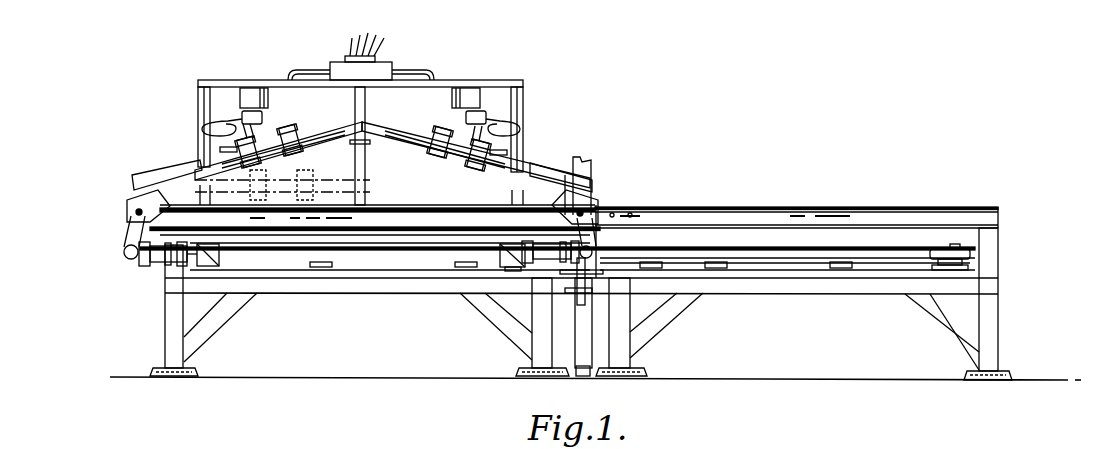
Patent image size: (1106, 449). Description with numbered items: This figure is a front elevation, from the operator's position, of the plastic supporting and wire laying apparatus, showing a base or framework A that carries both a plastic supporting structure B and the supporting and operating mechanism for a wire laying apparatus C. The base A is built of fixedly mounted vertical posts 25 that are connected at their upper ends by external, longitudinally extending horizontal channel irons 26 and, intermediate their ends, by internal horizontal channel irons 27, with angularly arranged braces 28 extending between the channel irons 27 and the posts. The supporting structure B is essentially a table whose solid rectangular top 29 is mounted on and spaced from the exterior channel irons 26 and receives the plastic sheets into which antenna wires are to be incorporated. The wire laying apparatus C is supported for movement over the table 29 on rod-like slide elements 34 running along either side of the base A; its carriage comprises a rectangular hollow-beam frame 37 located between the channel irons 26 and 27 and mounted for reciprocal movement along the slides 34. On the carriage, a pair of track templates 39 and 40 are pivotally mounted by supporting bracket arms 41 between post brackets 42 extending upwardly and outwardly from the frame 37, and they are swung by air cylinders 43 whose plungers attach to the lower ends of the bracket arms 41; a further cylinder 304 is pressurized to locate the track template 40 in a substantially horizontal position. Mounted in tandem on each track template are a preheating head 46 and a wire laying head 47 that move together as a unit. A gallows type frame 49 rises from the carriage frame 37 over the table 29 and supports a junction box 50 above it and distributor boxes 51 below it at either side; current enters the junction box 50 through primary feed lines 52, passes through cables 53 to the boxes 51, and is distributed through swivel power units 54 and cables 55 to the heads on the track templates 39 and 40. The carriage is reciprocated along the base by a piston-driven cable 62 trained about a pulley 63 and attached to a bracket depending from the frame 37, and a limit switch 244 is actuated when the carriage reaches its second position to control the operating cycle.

The vertical posts 25 is at (172, 318).
The external horizontal channel irons 26 is at (884, 223).
The internal horizontal channel irons 27 is at (343, 290).
The braces 28 is at (210, 322).
The table top 29 is at (653, 205).
The slide elements 34 is at (309, 274).
The carriage frame 37 is at (392, 243).
The track template 39 is at (162, 170).
The track template 40 is at (540, 162).
The supporting bracket arms 41 is at (126, 232).
The post brackets 42 is at (142, 217).
The air cylinders 43 is at (156, 263).
The preheating head 46 is at (294, 136).
The wire laying head 47 is at (262, 142).
The gallows type frame 49 is at (525, 97).
The junction box 50 is at (350, 70).
The distributor boxes 51 is at (257, 97).
The primary feed lines 52 is at (372, 47).
The cables 53 is at (302, 70).
The swivel power units 54 is at (251, 119).
The cables 55 is at (206, 122).
The cable 62 is at (748, 253).
The pulley 63 is at (833, 252).
The limit switch 244 is at (930, 256).
The cylinder 304 is at (526, 270).
The base or framework A is at (125, 295).
The plastic supporting structure B is at (714, 202).
The wire laying apparatus C is at (198, 160).